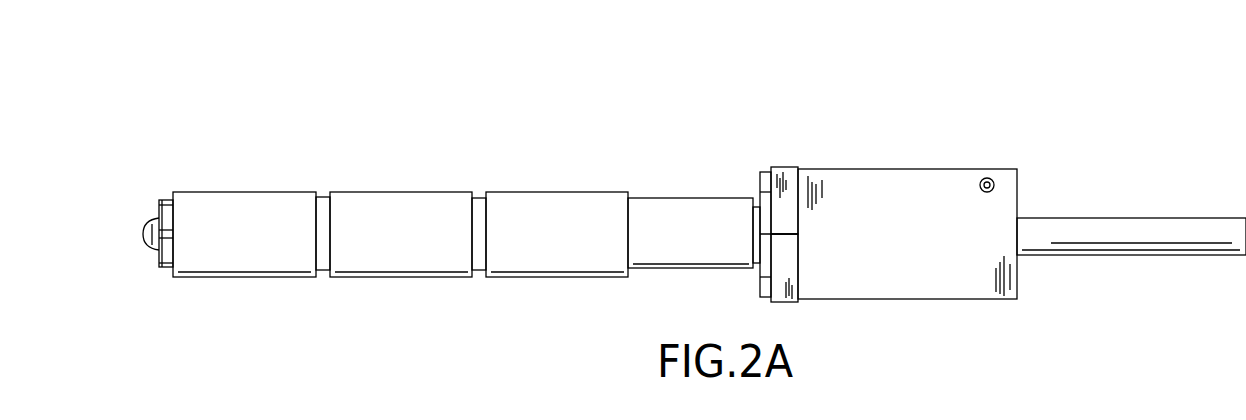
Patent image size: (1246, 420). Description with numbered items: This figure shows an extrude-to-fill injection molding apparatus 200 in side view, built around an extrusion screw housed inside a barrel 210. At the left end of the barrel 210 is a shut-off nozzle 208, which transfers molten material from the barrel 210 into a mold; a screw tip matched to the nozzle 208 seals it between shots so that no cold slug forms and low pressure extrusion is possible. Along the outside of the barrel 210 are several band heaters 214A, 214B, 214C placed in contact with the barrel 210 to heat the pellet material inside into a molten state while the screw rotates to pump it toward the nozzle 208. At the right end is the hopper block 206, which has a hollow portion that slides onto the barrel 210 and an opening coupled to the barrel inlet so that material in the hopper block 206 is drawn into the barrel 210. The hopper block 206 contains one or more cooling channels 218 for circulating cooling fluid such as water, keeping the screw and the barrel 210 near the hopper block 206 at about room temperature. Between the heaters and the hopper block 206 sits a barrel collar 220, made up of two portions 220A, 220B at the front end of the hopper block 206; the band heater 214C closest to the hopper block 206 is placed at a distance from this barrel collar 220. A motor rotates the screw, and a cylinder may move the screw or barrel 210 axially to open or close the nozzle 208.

The injection molding apparatus 200 is at (162, 95).
The hopper block 206 is at (895, 198).
The nozzle 208 is at (152, 240).
The barrel 210 is at (673, 220).
The band heater 214A is at (255, 221).
The band heater 214B is at (402, 220).
The band heater 214C is at (554, 220).
The cooling channel 218 is at (990, 178).
The barrel collar 220 is at (767, 146).
The barrel collar portion 220A is at (787, 185).
The barrel collar portion 220B is at (782, 288).